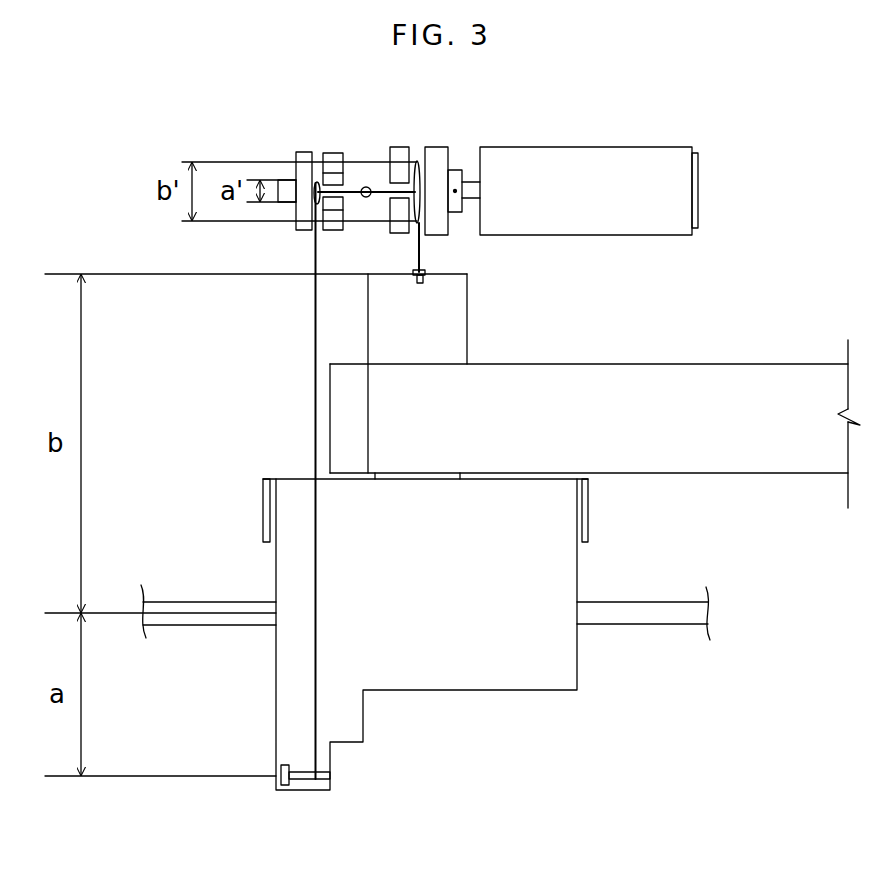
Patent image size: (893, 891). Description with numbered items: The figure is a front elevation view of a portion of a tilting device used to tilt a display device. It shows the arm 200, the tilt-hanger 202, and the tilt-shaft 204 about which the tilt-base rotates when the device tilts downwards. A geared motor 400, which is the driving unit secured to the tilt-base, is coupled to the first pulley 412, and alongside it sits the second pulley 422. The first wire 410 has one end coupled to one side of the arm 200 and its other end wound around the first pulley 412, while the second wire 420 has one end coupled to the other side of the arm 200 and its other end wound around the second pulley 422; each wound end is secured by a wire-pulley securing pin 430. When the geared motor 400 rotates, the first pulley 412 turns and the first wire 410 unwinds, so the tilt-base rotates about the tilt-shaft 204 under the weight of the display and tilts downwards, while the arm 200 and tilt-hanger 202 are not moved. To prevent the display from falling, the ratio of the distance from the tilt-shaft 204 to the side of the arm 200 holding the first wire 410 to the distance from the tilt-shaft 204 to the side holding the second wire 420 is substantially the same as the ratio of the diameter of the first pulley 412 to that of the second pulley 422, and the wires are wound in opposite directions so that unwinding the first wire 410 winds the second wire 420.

The arm 200 is at (707, 375).
The tilt-hanger 202 is at (505, 677).
The tilt-shaft 204 is at (646, 615).
The geared motor 400 is at (595, 160).
The first wire 410 is at (421, 255).
The first pulley 412 is at (437, 150).
The second wire 420 is at (315, 715).
The second pulley 422 is at (332, 151).
The wire-pulley securing pin 430 is at (367, 186).